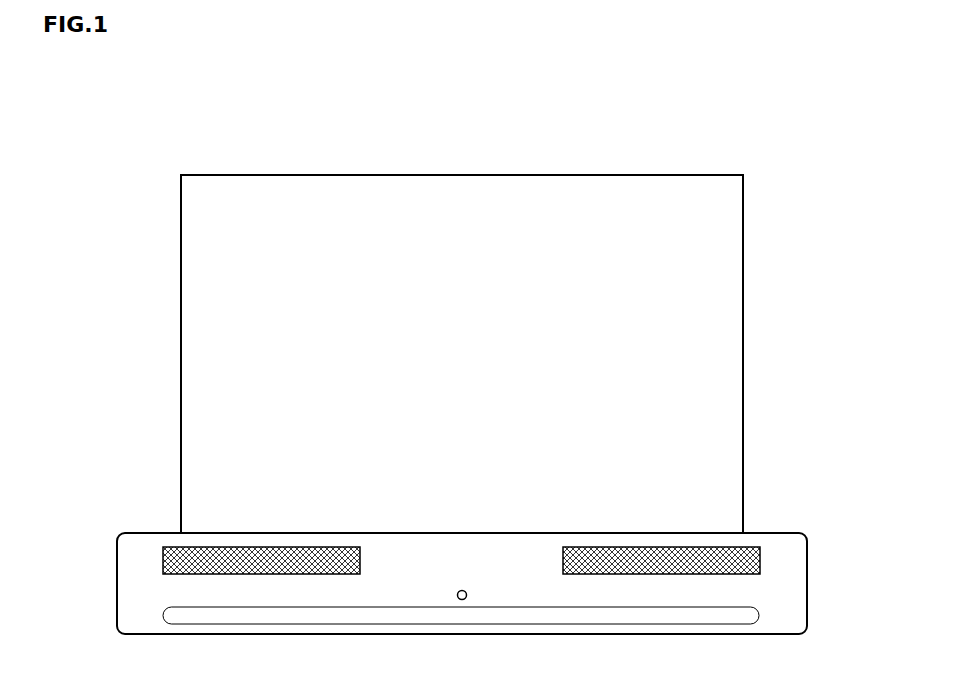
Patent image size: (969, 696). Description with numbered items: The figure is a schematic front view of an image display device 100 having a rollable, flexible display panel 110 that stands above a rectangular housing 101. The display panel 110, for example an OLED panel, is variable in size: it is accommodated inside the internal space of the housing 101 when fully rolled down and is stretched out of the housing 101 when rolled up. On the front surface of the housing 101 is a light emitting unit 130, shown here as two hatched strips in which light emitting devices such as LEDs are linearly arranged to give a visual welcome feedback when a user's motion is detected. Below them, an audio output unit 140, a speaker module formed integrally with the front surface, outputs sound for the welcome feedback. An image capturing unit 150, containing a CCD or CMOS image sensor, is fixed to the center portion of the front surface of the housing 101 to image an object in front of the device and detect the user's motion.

The image display device 100 is at (472, 157).
The display panel 110 is at (181, 352).
The housing 101 is at (117, 610).
The light emitting unit 130 is at (163, 565).
The audio output unit 140 is at (759, 614).
The image capturing unit 150 is at (466, 592).